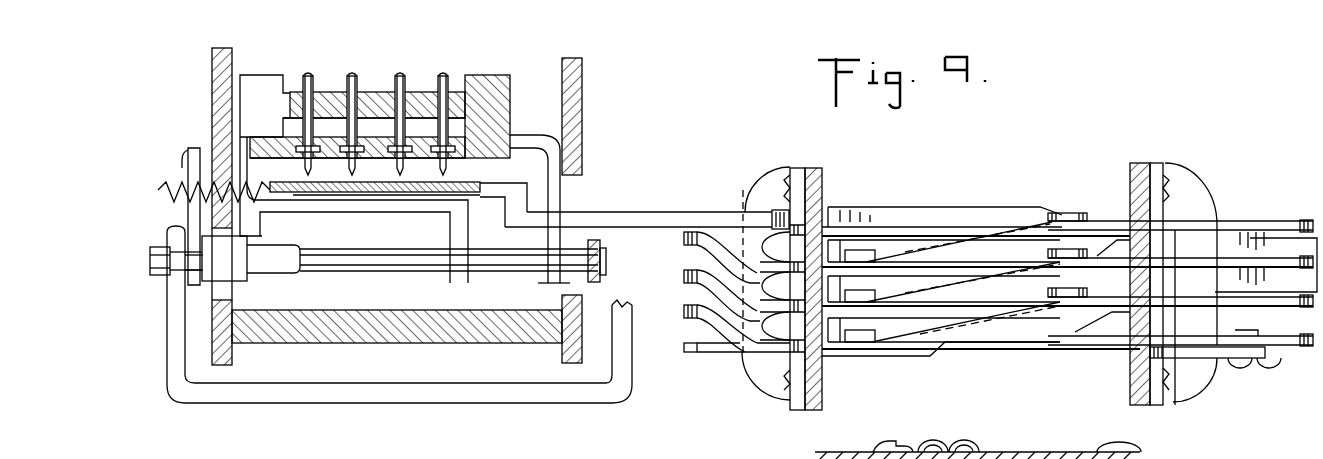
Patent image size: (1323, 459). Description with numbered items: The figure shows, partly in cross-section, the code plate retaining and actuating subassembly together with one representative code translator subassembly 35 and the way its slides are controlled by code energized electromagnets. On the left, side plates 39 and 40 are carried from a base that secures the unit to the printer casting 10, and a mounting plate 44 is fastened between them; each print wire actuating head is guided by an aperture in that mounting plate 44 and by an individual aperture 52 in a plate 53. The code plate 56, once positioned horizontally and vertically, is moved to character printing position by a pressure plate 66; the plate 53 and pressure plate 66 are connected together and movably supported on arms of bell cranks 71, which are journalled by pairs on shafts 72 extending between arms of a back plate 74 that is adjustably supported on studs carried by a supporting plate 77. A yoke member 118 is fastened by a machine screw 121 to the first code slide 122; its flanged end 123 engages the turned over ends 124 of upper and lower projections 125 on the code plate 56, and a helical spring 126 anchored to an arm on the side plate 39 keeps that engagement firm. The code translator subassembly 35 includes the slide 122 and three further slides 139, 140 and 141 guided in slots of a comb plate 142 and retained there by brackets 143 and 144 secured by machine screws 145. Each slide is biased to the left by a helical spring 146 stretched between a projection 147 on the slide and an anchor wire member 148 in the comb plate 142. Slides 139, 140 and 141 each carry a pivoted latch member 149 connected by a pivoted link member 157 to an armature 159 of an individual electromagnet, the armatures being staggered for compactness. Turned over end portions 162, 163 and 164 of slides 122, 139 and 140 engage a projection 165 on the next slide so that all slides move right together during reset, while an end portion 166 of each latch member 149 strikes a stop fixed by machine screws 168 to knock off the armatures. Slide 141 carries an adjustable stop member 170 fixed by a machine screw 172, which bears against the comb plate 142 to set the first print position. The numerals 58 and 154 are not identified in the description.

The printer casting 10 is at (692, 360).
The code translator subassembly 35 is at (1032, 198).
The side plate 39 is at (212, 80).
The side plate 40 is at (582, 108).
The mounting plate 44 is at (272, 75).
The aperture 52 is at (463, 148).
The plate 53 is at (443, 73).
The code plate 56 is at (397, 196).
The pin holder 58 is at (458, 157).
The pressure plate 66 is at (342, 206).
The bell crank 71 is at (190, 158).
The shaft 72 is at (348, 272).
The back plate 74 is at (376, 400).
The supporting plate 77 is at (380, 343).
The yoke member 118 is at (630, 200).
The machine screw 121 is at (727, 210).
The code translator slide 122 is at (838, 222).
The flanged end 123 is at (521, 209).
The turned over end 124 is at (580, 200).
The projection 125 is at (507, 183).
The helical spring 126 is at (207, 182).
The code translator slide 139 is at (1268, 262).
The code translator slide 140 is at (1228, 292).
The code translator slide 141 is at (1293, 345).
The comb plate 142 is at (824, 396).
The bracket 143 is at (1200, 372).
The bracket 144 is at (765, 398).
The machine screw 145 is at (772, 170).
The helical spring 146 is at (1036, 452).
The projection 147 is at (1090, 452).
The anchor wire member 148 is at (966, 444).
The latch member 149 is at (940, 262).
The support 154 is at (880, 300).
The pivoted link member 157 is at (1088, 212).
The armature 159 is at (948, 210).
The turned over end portion 162 is at (718, 238).
The turned over end portion 163 is at (718, 277).
The turned over end portion 164 is at (718, 313).
The projection 165 is at (785, 288).
The end portion 166 is at (856, 452).
The machine screw 168 is at (905, 446).
The adjustable stop member 170 is at (1258, 360).
The machine screw 172 is at (1256, 388).